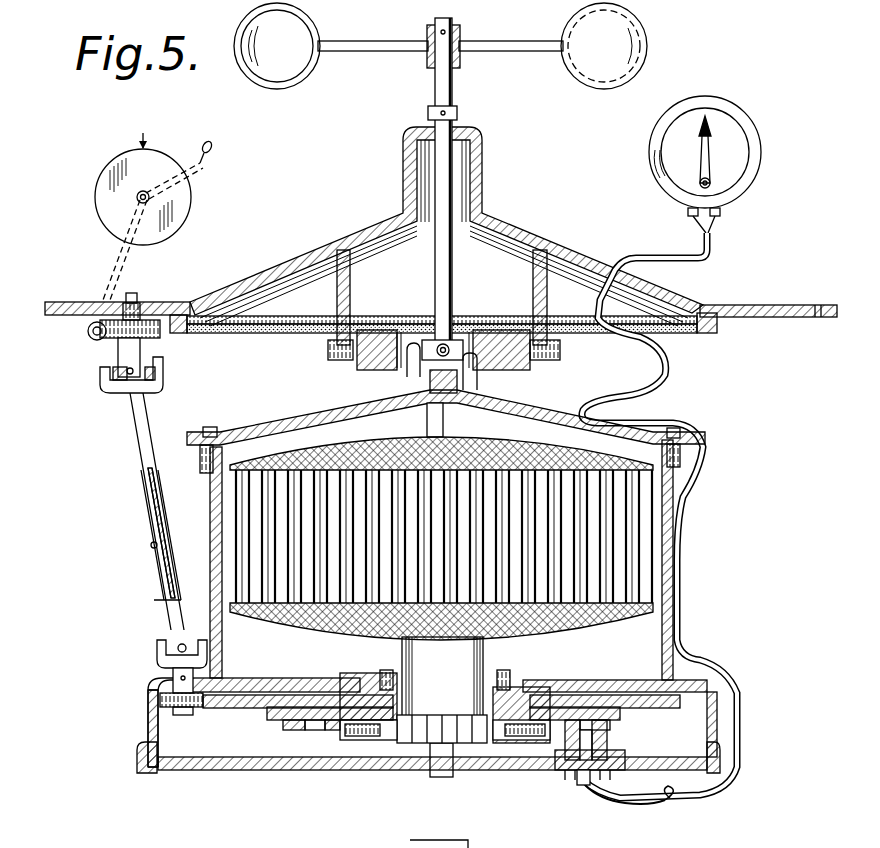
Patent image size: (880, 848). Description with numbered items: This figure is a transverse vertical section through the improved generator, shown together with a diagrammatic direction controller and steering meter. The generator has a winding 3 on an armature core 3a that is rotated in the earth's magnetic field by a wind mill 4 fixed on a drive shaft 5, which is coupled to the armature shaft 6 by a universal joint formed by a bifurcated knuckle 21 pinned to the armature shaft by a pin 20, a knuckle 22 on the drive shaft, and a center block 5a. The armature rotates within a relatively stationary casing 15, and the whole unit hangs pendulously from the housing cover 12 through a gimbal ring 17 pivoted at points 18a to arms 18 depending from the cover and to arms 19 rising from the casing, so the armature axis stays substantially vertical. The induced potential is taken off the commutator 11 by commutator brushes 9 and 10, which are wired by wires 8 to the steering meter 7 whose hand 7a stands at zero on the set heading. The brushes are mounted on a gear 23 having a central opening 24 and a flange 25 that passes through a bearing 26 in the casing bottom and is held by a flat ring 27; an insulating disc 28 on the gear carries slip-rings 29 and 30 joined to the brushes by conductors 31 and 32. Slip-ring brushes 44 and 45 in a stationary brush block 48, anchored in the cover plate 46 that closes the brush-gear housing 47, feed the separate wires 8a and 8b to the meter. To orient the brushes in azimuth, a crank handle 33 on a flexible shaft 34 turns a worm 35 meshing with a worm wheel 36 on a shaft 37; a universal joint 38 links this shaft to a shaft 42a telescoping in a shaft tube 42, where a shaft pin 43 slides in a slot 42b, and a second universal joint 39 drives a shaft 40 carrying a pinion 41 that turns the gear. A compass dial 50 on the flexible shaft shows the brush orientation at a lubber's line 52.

The armature winding 3 is at (325, 440).
The armature core 3a is at (253, 547).
The wind mill 4 is at (285, 82).
The drive shaft 5 is at (453, 95).
The center block 5a is at (457, 343).
The armature shaft 6 is at (452, 283).
The steering meter 7 is at (650, 163).
The hand 7a is at (710, 165).
The wires 8 is at (666, 257).
The wire 8a is at (626, 805).
The wire 8b is at (669, 802).
The commutator brush 9 is at (368, 740).
The commutator brush 10 is at (503, 740).
The commutator 11 is at (425, 745).
The housing cover 12 is at (305, 255).
The armature casing 15 is at (268, 430).
The gimbal ring 17 is at (520, 365).
The arms 18 is at (352, 290).
The pivot points 18a is at (330, 348).
The arms 19 is at (478, 385).
The pin 20 is at (430, 380).
The knuckle 21 is at (410, 373).
The knuckle 22 is at (437, 340).
The gear 23 is at (250, 695).
The central opening 24 is at (490, 697).
The flange 25 is at (497, 690).
The bearing 26 is at (365, 680).
The flat ring 27 is at (388, 672).
The insulating disc 28 is at (290, 710).
The slip-ring 29 is at (313, 725).
The slip-ring 30 is at (290, 725).
The electric conductor 31 is at (348, 725).
The electric conductor 32 is at (570, 765).
The crank handle 33 is at (203, 165).
The flexible shaft 34 is at (138, 195).
The worm 35 is at (100, 335).
The worm wheel 36 is at (118, 350).
The shaft 37 is at (138, 295).
The universal joint 38 is at (105, 395).
The universal joint 39 is at (157, 652).
The shaft 40 is at (173, 680).
The pinion 41 is at (160, 700).
The shaft tube 42 is at (150, 490).
The shaft 42a is at (145, 452).
The slot 42b is at (150, 517).
The shaft pin 43 is at (150, 545).
The slip-ring brush 44 is at (595, 733).
The slip-ring brush 45 is at (607, 745).
The cover plate 46 is at (152, 773).
The brush-gear housing 47 is at (148, 730).
The brush block 48 is at (585, 786).
The compass dial 50 is at (190, 210).
The lubber's line 52 is at (141, 133).